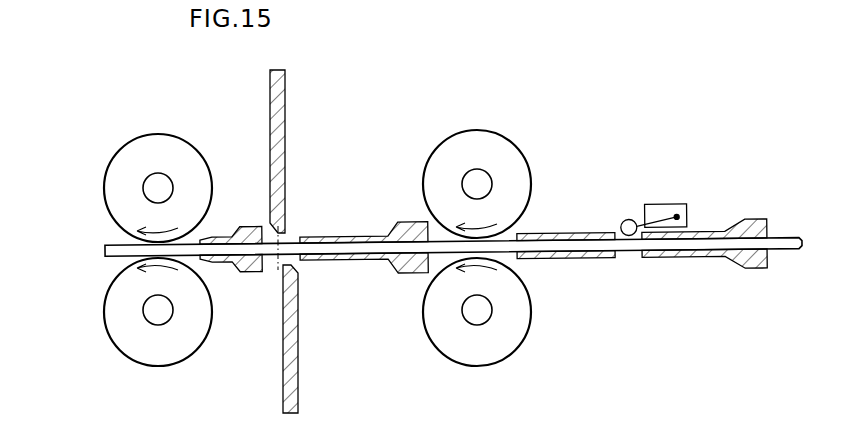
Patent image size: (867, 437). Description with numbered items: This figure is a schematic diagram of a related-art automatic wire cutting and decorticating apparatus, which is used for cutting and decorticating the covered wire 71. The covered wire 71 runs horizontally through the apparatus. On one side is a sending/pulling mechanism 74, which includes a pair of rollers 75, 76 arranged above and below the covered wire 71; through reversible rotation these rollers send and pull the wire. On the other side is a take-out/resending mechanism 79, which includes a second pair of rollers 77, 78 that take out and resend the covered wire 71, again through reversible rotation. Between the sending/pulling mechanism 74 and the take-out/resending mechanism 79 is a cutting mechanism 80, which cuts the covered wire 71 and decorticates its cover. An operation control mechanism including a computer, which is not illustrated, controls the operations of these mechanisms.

The covered wire 71 is at (778, 230).
The sending/pulling mechanism 74 is at (509, 248).
The roller 75 is at (523, 174).
The roller 76 is at (505, 278).
The roller 77 is at (113, 200).
The roller 78 is at (146, 312).
The take-out/resending mechanism 79 is at (128, 250).
The cutting mechanism 80 is at (281, 109).